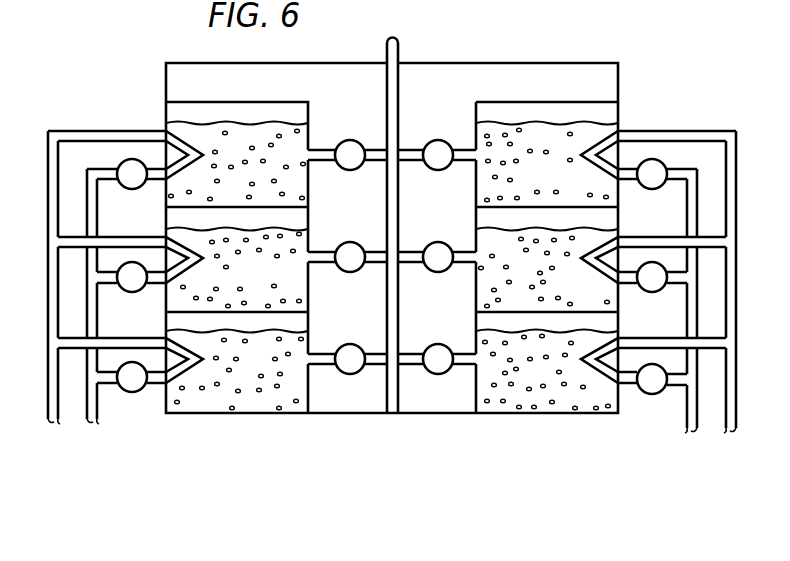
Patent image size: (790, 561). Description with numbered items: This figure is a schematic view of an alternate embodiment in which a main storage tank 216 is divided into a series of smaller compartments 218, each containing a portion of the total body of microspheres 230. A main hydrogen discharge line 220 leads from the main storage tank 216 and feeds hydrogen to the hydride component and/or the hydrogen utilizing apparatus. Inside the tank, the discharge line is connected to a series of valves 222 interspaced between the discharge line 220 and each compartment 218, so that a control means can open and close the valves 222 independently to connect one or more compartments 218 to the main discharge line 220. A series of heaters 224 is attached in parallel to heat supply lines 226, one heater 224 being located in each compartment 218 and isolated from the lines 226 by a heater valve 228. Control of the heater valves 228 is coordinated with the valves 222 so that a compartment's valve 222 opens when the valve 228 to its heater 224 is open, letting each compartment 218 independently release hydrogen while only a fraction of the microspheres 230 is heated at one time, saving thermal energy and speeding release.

The main storage tank 216 is at (166, 65).
The compartments 218 is at (478, 125).
The main hydrogen discharge line 220 is at (399, 54).
The valves 222 is at (387, 138).
The heaters 224 is at (191, 166).
The heat supply lines 226 is at (86, 421).
The heater valves 228 is at (132, 158).
The microspheres 230 is at (266, 130).